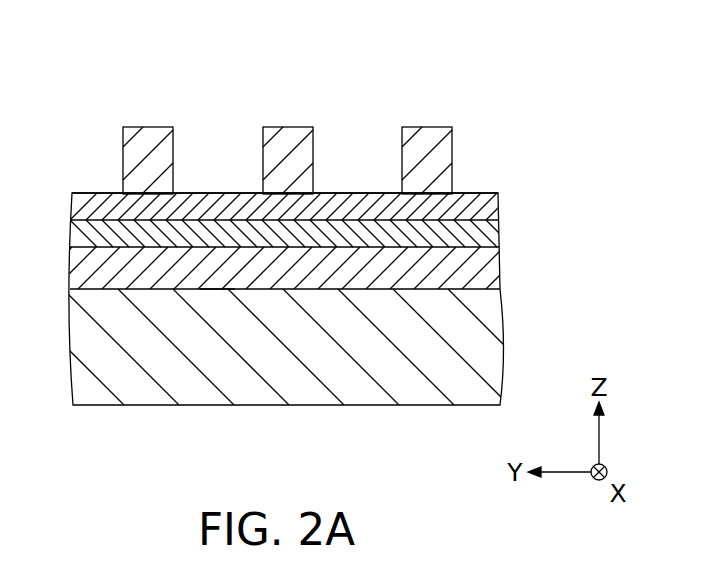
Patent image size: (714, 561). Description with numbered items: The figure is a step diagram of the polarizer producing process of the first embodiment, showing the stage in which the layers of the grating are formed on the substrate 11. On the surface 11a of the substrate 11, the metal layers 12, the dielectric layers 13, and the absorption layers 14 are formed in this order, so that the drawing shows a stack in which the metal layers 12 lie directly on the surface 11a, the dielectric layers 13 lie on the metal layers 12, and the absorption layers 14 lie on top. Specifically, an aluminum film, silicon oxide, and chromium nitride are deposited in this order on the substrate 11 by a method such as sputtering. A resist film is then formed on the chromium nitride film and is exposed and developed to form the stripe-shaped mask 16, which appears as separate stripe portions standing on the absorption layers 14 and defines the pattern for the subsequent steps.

The substrate 11 is at (490, 327).
The surface of the substrate 11a is at (218, 277).
The metal layers 12 is at (494, 278).
The dielectric layers 13 is at (492, 240).
The absorption layers 14 is at (492, 208).
The stripe-shaped mask 16 is at (440, 155).